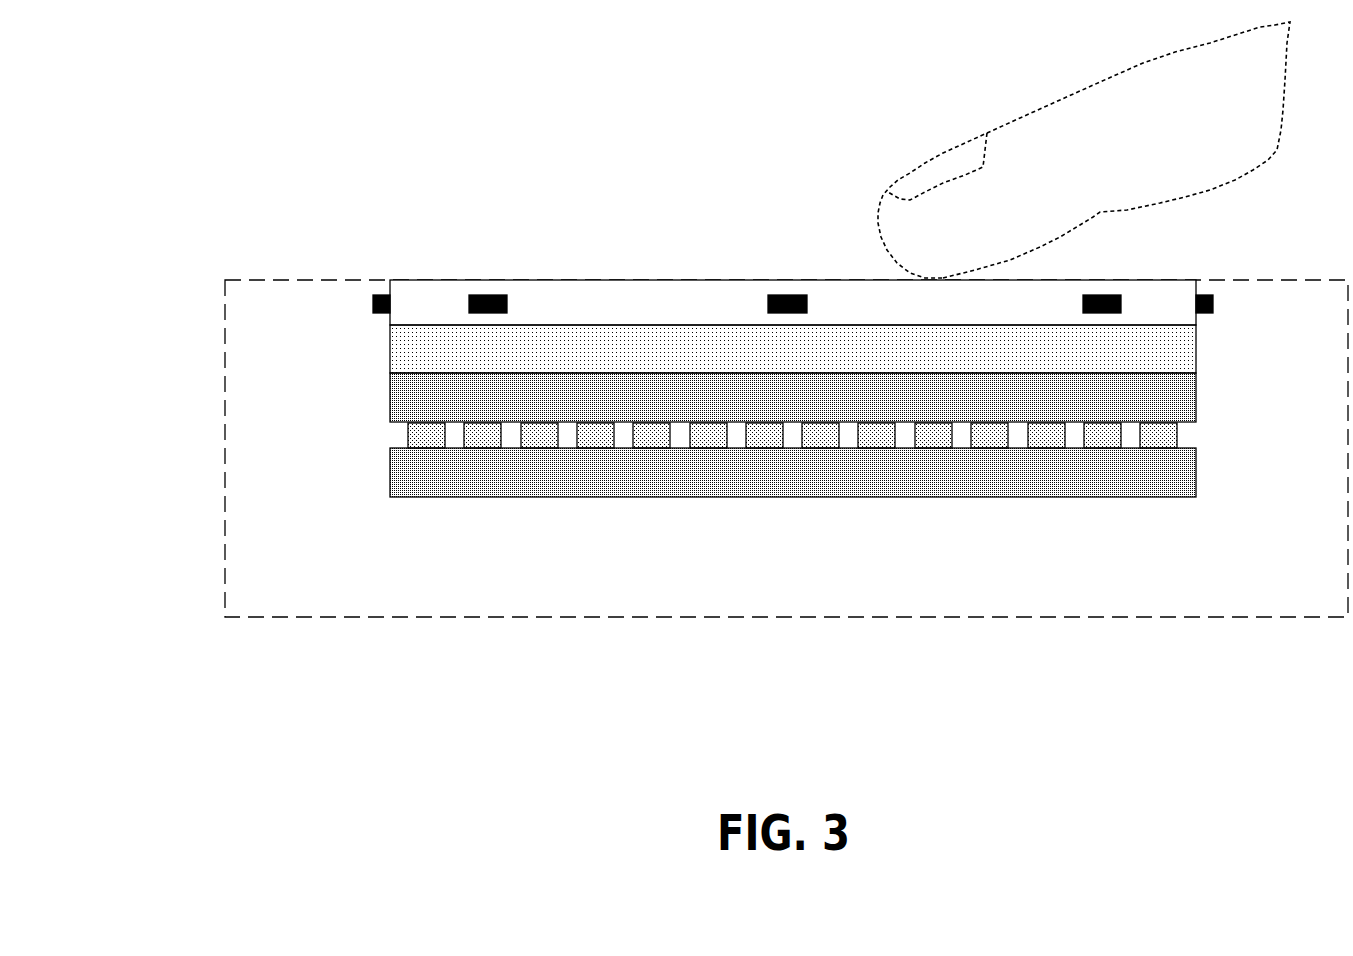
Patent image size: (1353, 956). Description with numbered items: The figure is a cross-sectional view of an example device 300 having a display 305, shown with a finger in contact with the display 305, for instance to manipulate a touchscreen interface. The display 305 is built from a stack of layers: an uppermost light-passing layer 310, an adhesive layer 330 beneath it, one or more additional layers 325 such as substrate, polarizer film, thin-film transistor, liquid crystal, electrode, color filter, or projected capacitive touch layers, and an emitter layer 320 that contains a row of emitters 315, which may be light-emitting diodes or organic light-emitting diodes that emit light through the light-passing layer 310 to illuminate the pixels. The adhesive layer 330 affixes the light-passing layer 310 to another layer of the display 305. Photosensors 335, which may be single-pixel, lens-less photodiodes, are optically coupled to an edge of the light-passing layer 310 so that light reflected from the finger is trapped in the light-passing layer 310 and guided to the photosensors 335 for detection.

The device 300 is at (236, 196).
The display 305 is at (353, 323).
The light-passing layer 310 is at (572, 298).
The emitters 315 is at (1158, 440).
The emitter layer 320 is at (835, 497).
The additional layers 325 is at (413, 392).
The adhesive layer 330 is at (1182, 347).
The photosensors 335 is at (382, 297).